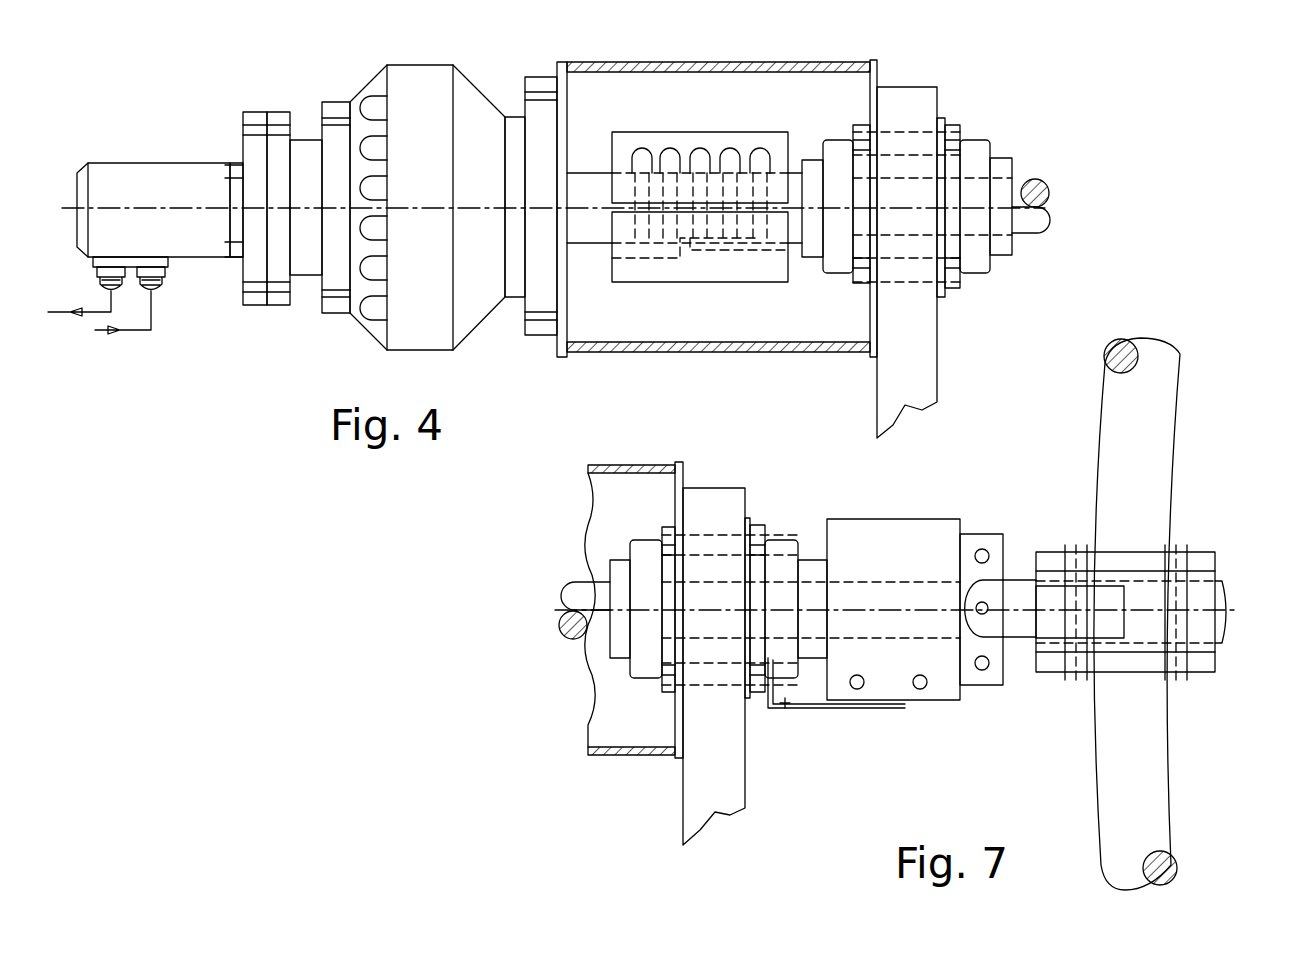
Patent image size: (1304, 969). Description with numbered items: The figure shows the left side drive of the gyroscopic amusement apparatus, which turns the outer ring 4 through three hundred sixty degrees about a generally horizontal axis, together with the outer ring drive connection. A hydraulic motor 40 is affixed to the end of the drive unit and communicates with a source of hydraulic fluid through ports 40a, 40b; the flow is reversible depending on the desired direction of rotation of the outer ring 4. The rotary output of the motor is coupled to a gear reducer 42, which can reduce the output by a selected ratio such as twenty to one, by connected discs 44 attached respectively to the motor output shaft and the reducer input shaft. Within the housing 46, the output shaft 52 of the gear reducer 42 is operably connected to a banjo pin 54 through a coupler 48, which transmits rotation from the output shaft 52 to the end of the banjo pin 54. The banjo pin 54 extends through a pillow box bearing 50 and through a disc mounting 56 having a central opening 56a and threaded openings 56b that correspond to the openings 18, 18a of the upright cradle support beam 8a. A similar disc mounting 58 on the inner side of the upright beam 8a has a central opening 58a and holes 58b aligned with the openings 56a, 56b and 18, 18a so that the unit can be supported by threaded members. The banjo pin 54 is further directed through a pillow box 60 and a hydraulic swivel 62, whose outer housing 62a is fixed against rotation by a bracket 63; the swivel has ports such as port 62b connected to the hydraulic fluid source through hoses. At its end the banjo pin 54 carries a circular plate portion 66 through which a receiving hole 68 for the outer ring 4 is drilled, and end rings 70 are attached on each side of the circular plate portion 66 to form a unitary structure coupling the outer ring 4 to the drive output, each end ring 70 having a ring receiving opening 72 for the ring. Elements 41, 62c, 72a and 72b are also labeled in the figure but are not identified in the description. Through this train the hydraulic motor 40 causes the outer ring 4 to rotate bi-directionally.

In FIG. 7, the outer ring 4 is at (1165, 825).
In FIG. 4, the upright support beam 8a is at (900, 100).
In FIG. 7, the upright support beam 8a is at (714, 666).
In FIG. 4, the opening 18 is at (862, 240).
In FIG. 4, the bolt holes 18a is at (905, 140).
In FIG. 7, the bolt holes 18a is at (811, 608).
In FIG. 4, the hydraulic motor 40 is at (120, 175).
In FIG. 4, the port 40a is at (100, 286).
In FIG. 4, the port 40b is at (162, 288).
In FIG. 4, the motor flange 41 is at (256, 112).
In FIG. 4, the gear reducer 42 is at (415, 75).
In FIG. 4, the connected discs 44 is at (280, 112).
In FIG. 4, the housing 46 is at (570, 64).
In FIG. 7, the housing 46 is at (612, 465).
In FIG. 4, the coupler 48 is at (712, 140).
In FIG. 4, the pillow box bearing 50 is at (872, 90).
In FIG. 7, the pillow box bearing 50 is at (640, 670).
In FIG. 4, the output shaft 52 is at (575, 175).
In FIG. 4, the banjo pin 54 is at (800, 180).
In FIG. 4, the disc mounting 56 is at (1050, 225).
In FIG. 7, the disc mounting 56 is at (663, 690).
In FIG. 4, the central opening 56a is at (830, 210).
In FIG. 4, the threaded openings 56b is at (840, 150).
In FIG. 4, the disc mounting 58 is at (960, 122).
In FIG. 7, the disc mounting 58 is at (757, 523).
In FIG. 4, the central opening 58a is at (1000, 170).
In FIG. 4, the holes 58b is at (960, 250).
In FIG. 4, the pillow box 60 is at (978, 155).
In FIG. 7, the pillow box 60 is at (790, 545).
In FIG. 7, the hydraulic swivel 62 is at (908, 530).
In FIG. 7, the outer housing 62a is at (850, 528).
In FIG. 7, the port 62b is at (857, 690).
In FIG. 7, the mounting hole 62c is at (920, 690).
In FIG. 7, the bracket 63 is at (815, 710).
In FIG. 7, the circular plate portion 66 is at (1215, 598).
In FIG. 7, the receiving hole 68 is at (1100, 672).
In FIG. 7, the end rings 70 is at (1222, 640).
In FIG. 7, the ring receiving opening 72 is at (1150, 555).
In FIG. 7, the clamp half 72a is at (1145, 672).
In FIG. 7, the clamp half 72b is at (1185, 565).